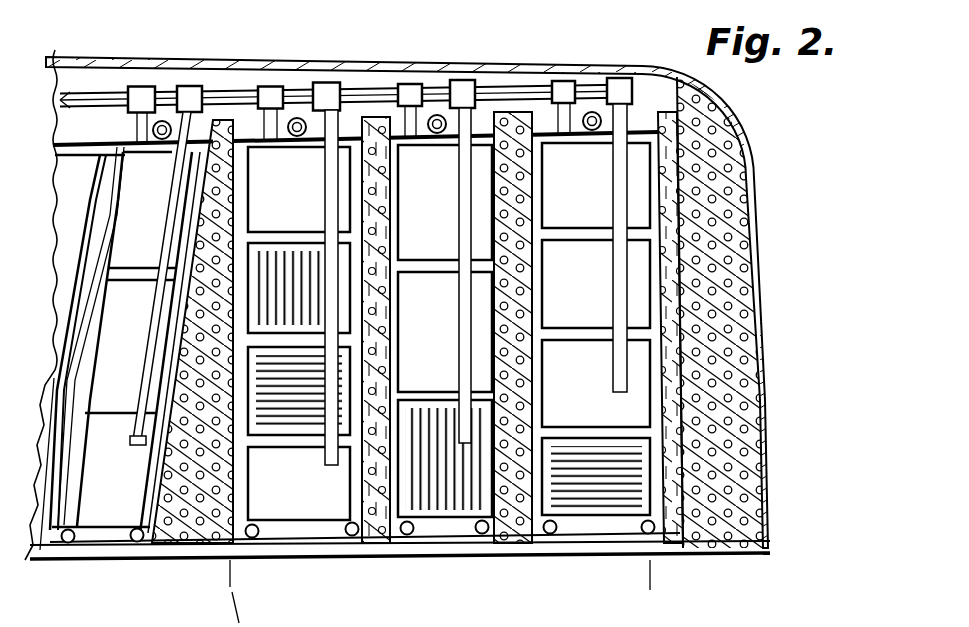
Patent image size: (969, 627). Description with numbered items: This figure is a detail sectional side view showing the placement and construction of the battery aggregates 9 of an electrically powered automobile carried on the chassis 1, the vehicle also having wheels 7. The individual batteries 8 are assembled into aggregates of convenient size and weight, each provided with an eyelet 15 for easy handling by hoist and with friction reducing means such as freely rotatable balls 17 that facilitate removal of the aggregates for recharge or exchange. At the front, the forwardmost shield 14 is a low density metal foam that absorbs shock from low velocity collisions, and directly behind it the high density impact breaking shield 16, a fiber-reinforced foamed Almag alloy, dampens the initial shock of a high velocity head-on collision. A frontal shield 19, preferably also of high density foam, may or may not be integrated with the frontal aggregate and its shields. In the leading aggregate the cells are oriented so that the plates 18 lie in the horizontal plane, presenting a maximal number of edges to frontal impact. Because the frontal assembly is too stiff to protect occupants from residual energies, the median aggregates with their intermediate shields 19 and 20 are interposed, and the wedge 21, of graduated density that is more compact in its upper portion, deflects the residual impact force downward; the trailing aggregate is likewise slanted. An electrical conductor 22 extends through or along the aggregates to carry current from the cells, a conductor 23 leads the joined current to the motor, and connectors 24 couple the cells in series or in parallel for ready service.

The chassis 1 is at (58, 560).
The wheels 7 is at (651, 594).
The batteries 8 is at (110, 196).
The battery aggregates 9 is at (162, 46).
The forwardmost shield 14 is at (722, 548).
The eyelet 15 is at (303, 134).
The high density impact breaking shield 16 is at (670, 548).
The freely rotatable balls 17 is at (138, 542).
The plates 18 is at (270, 250).
The frontal shield 19 is at (516, 543).
The intermediate shield 20 is at (378, 543).
The wedge 21 is at (192, 543).
The electrical conductor 22 is at (172, 205).
The conductor 23 is at (84, 100).
The connectors 24 is at (138, 92).